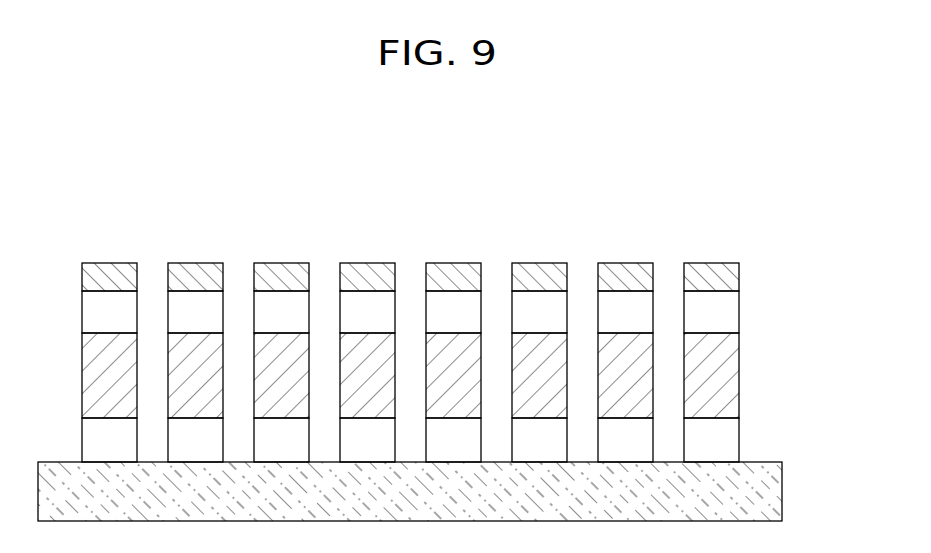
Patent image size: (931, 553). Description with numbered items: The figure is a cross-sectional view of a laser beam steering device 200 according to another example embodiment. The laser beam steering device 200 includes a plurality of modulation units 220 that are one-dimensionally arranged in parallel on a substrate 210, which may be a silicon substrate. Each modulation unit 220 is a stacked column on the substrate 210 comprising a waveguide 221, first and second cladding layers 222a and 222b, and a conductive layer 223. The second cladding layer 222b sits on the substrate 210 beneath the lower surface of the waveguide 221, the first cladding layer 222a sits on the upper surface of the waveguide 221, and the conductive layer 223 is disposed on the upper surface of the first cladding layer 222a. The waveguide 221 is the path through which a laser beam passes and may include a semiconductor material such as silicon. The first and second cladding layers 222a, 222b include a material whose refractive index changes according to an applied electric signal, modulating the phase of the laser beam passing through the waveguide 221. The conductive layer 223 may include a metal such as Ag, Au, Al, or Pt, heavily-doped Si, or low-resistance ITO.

The laser beam steering device 200 is at (772, 220).
The substrate 210 is at (782, 491).
The modulation unit 220 is at (109, 254).
The waveguide 221 is at (739, 375).
The first cladding layer 222a is at (739, 312).
The second cladding layer 222b is at (739, 440).
The conductive layer 223 is at (739, 277).